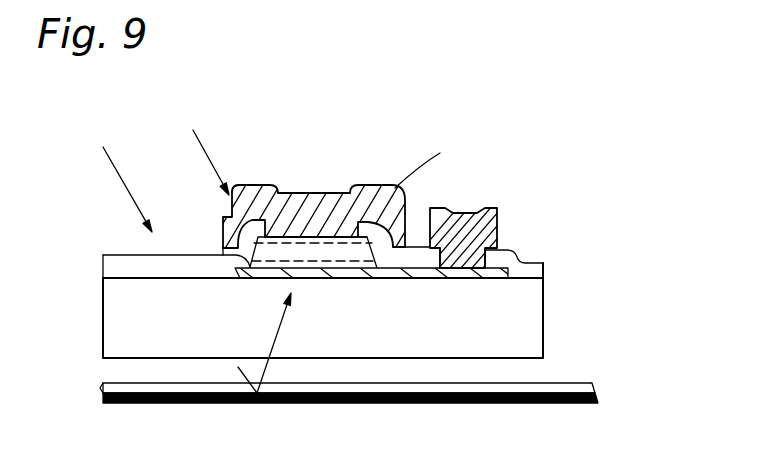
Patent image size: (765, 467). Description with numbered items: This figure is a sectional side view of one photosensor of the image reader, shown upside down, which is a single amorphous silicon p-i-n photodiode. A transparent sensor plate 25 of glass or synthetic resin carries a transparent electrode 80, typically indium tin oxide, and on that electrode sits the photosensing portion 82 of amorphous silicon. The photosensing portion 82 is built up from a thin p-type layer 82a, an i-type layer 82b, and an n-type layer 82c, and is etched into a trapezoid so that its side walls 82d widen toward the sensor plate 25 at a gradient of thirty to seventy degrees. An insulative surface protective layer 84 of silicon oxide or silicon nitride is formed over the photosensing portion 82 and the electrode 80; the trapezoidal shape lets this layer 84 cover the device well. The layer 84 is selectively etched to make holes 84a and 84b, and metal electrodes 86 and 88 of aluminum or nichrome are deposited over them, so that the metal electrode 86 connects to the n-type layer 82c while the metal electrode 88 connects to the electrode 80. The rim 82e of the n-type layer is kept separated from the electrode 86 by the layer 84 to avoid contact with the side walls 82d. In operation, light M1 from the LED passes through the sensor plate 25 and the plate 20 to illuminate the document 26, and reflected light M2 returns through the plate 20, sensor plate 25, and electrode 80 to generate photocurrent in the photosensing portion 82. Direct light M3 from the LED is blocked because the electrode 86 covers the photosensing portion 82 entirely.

The plate 20 is at (572, 386).
The transparent sensor plate 25 is at (543, 313).
The document 26 is at (528, 404).
The transparent electrode 80 is at (545, 273).
The photosensing portion 82 is at (407, 198).
The p-type layer 82a is at (312, 265).
The i-type layer 82b is at (293, 247).
The n-type layer 82c is at (287, 215).
The side walls 82d is at (222, 249).
The rim 82e is at (246, 188).
The surface protective layer 84 is at (115, 263).
The hole 84a is at (327, 236).
The hole 84b is at (507, 248).
The metal electrode 86 is at (352, 253).
The metal electrode 88 is at (478, 220).
The light emitted from the LED M1 is at (122, 177).
The reflected light M2 is at (275, 343).
The direct light M3 is at (203, 151).